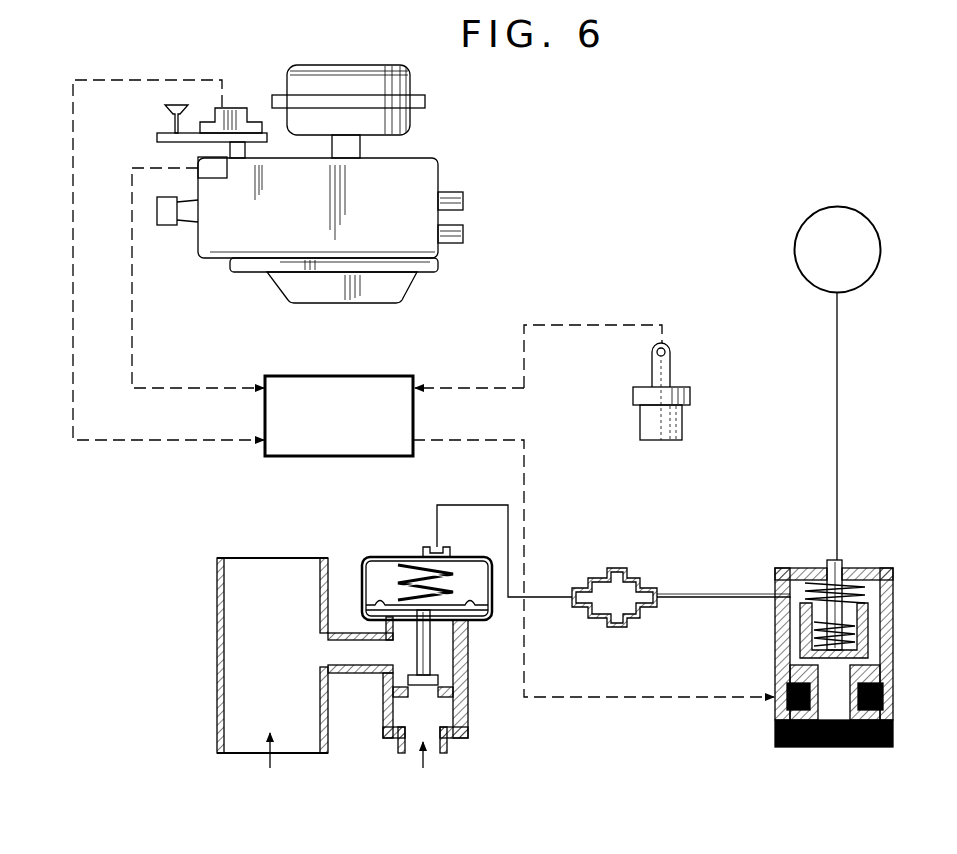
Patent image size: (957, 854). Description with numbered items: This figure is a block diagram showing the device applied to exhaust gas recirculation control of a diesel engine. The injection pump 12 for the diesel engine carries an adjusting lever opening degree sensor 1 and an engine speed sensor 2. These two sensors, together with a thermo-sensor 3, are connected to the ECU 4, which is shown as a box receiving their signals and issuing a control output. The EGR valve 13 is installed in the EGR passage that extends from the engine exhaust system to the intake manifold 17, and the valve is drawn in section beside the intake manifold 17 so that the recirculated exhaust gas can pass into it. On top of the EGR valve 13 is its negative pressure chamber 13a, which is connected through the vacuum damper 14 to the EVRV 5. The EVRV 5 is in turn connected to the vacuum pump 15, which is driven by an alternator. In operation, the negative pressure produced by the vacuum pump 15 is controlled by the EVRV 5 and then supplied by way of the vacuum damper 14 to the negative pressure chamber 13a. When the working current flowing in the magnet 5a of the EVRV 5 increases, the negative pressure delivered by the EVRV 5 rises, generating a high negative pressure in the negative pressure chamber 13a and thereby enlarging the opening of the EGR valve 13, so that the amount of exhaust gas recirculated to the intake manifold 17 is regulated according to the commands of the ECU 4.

The adjusting lever opening degree sensor 1 is at (228, 108).
The engine speed sensor 2 is at (198, 160).
The injection pump 12 is at (425, 177).
The ECU 4 is at (347, 376).
The thermo-sensor 3 is at (665, 353).
The vacuum pump 15 is at (880, 244).
The negative pressure chamber 13a is at (381, 570).
The EGR valve 13 is at (468, 715).
The vacuum damper 14 is at (595, 572).
The intake manifold 17 is at (217, 645).
The EVRV 5 is at (837, 653).
The magnet 5a is at (882, 694).